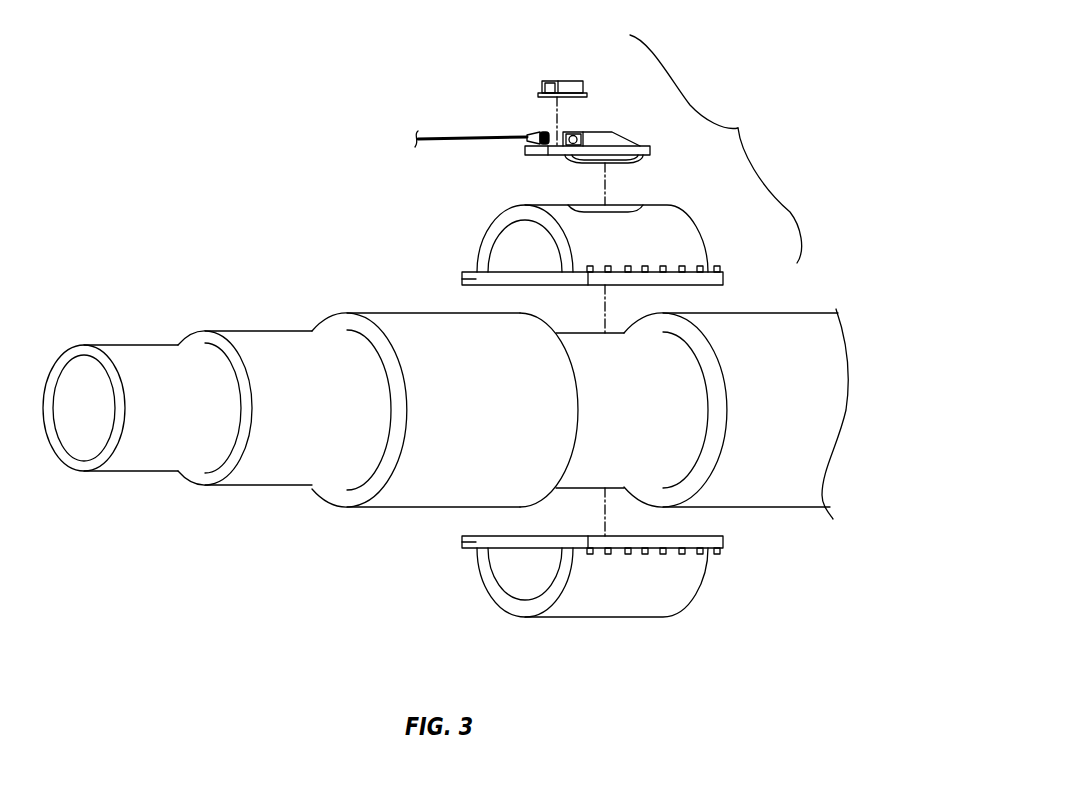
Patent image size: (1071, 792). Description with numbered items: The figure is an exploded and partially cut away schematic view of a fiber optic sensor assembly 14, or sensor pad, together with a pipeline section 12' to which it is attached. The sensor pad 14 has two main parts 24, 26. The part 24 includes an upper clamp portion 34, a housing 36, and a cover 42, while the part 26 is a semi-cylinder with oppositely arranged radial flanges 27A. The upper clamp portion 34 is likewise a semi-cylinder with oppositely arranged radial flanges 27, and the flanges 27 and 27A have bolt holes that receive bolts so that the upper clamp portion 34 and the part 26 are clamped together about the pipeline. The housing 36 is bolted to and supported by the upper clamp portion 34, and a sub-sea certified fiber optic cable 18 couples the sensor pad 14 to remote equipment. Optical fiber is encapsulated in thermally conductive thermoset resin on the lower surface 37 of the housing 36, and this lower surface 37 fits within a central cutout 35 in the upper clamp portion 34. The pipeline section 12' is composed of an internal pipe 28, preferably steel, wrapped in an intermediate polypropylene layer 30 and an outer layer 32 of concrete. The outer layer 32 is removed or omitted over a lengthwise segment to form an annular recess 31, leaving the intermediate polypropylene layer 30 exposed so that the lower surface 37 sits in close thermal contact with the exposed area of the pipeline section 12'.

The fiber optic sensor assembly 14 is at (674, 38).
The part 24 is at (770, 185).
The cover 42 is at (573, 80).
The fiber optic cable 18 is at (478, 137).
The housing 36 is at (612, 131).
The lower surface 37 is at (617, 168).
The central cutout 35 is at (587, 207).
The upper clamp portion 34 is at (614, 224).
The radial flanges 27 is at (462, 276).
The internal pipe 28 is at (147, 350).
The intermediate polypropylene layer 30 is at (280, 340).
The outer layer 32 is at (442, 320).
The annular recess 31 is at (592, 337).
The pipeline section 12' is at (736, 401).
The part 26 is at (672, 590).
The radial flanges 27A is at (462, 546).